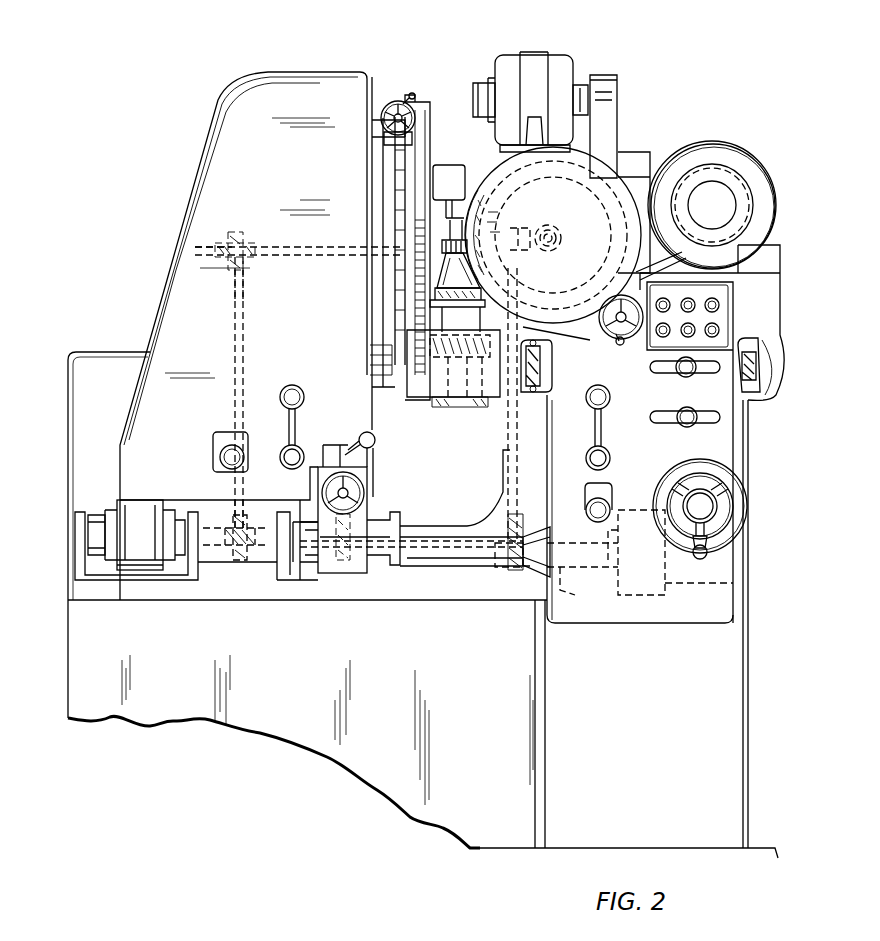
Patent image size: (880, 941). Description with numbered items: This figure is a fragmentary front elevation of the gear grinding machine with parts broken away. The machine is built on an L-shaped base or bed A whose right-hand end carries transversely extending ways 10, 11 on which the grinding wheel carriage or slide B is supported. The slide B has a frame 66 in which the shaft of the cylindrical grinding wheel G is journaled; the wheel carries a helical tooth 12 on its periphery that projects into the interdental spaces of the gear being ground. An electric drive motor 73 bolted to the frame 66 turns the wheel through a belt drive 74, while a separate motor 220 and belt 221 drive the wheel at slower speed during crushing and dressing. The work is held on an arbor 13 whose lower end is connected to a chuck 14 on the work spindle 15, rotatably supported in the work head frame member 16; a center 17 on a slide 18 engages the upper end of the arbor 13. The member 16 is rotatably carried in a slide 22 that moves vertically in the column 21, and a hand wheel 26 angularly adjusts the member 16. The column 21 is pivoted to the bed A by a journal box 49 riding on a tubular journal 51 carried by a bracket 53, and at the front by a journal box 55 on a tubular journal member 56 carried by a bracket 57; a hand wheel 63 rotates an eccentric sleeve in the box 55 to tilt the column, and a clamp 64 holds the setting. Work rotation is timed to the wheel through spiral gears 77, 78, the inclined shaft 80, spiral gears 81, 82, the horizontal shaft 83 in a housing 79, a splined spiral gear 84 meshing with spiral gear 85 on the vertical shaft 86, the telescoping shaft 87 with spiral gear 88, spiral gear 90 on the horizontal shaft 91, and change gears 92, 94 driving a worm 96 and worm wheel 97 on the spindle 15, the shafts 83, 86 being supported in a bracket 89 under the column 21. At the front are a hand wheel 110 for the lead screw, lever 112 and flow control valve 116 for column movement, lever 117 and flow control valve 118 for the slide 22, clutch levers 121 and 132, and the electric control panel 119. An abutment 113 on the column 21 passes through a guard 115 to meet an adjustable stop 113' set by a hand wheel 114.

The base or bed A is at (90, 670).
The grinding wheel carriage or slide B is at (560, 372).
The grinding wheel G is at (560, 270).
The way 10 is at (546, 360).
The way 11 is at (738, 365).
The helical tooth 12 is at (447, 229).
The arbor 13 is at (455, 268).
The chuck 14 is at (465, 305).
The work spindle 15 is at (458, 402).
The work head frame member 16 is at (428, 112).
The center 17 is at (489, 216).
The slide 18 is at (438, 163).
The column 21 is at (218, 152).
The slide 22 is at (374, 157).
The hand wheel 26 is at (394, 98).
The journal box 49 is at (147, 575).
The tubular journal 51 is at (100, 514).
The bracket 53 is at (92, 585).
The journal box 55 is at (345, 585).
The tubular journal member 56 is at (295, 558).
The bracket 57 is at (292, 585).
The hand wheel 63 is at (366, 495).
The clamp 64 is at (372, 457).
The frame 66 is at (769, 388).
The electric drive motor 73 is at (714, 148).
The belt drive 74 is at (638, 176).
The spiral gear 77 is at (555, 226).
The spiral gear 78 is at (526, 228).
The housing 79 is at (495, 497).
The inclined shaft 80 is at (512, 452).
The spiral gear 81 is at (505, 578).
The spiral gear 82 is at (509, 530).
The horizontal shaft 83 is at (440, 520).
The spiral gear 84 is at (235, 558).
The spiral gear 85 is at (238, 528).
The vertical shaft 86 is at (232, 412).
The shaft 87 is at (232, 286).
The spiral gear 88 is at (205, 248).
The housing or bracket 89 is at (300, 512).
The spiral gear 90 is at (238, 232).
The horizontal shaft 91 is at (322, 251).
The drive gear 92 is at (394, 220).
The driven gear 94 is at (405, 355).
The worm 96 is at (450, 364).
The worm wheel 97 is at (482, 362).
The hand wheel 110 is at (620, 345).
The lever 112 is at (302, 406).
The abutment 113 is at (582, 581).
The adjustable stop 113' is at (670, 564).
The hand wheel 114 is at (672, 466).
The guard 115 is at (420, 566).
The flow control valve 116 is at (215, 446).
The lever 117 is at (596, 425).
The flow control valve 118 is at (612, 503).
The electric control panel 119 is at (718, 302).
The lever 121 is at (680, 422).
The clutch lever 132 is at (680, 377).
The motor 220 is at (536, 66).
The belt 221 is at (618, 97).